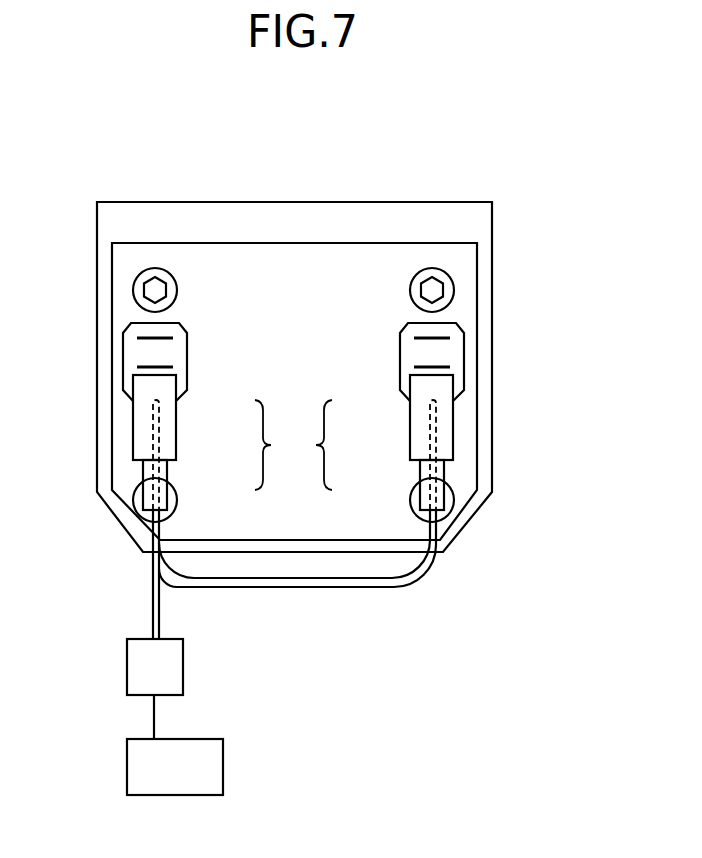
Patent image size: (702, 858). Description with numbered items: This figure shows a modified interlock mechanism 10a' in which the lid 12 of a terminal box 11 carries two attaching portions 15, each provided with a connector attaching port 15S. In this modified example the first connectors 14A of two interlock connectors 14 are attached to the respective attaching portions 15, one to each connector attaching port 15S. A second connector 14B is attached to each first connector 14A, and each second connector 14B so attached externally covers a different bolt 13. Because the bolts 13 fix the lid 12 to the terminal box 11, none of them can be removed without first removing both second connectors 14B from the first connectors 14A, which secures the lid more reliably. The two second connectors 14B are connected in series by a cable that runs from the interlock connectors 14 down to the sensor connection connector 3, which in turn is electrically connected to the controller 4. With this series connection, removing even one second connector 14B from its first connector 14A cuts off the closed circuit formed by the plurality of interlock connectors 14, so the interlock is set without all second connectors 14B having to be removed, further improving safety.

The interlock mechanism 10a' is at (323, 331).
The terminal box 11 is at (473, 216).
The lid 12 is at (458, 258).
The bolt 13 is at (133, 292).
The interlock connector 14 is at (293, 455).
The first connector 14A is at (163, 412).
The second connector 14B is at (167, 470).
The attaching portion 15 is at (170, 345).
The connector attaching port 15S is at (178, 392).
The sensor connection connector 3 is at (175, 667).
The controller 4 is at (213, 767).